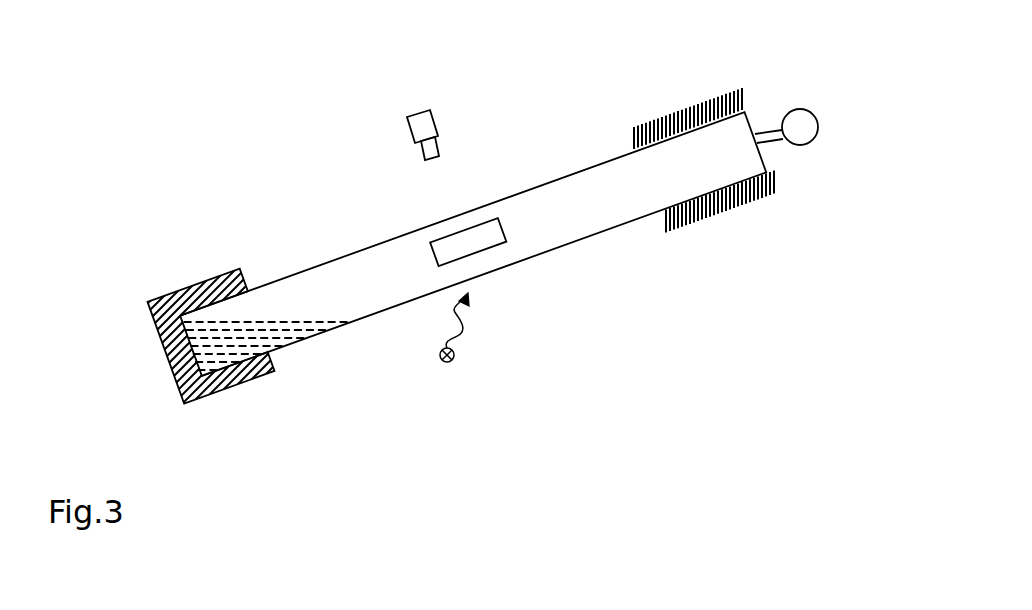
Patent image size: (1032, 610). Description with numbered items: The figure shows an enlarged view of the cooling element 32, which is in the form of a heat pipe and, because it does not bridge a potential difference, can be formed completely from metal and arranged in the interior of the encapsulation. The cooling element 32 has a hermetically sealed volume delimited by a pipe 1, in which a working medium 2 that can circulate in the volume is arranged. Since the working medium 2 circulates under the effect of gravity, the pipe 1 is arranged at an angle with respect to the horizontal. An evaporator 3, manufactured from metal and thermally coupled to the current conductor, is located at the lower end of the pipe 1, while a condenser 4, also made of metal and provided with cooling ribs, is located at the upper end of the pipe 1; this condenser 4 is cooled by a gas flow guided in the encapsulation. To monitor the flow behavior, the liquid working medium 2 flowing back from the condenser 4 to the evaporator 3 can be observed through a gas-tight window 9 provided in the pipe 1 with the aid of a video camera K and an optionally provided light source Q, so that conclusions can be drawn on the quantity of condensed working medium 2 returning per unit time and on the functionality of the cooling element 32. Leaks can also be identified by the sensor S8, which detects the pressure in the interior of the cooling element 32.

The pipe 1 is at (355, 283).
The working medium 2 is at (247, 345).
The evaporator 3 is at (198, 305).
The condenser 4 is at (745, 208).
The gas-tight window 9 is at (482, 233).
The video camera K is at (413, 125).
The light source Q is at (451, 361).
The sensor S8 is at (768, 130).
The cooling element 32 is at (567, 342).